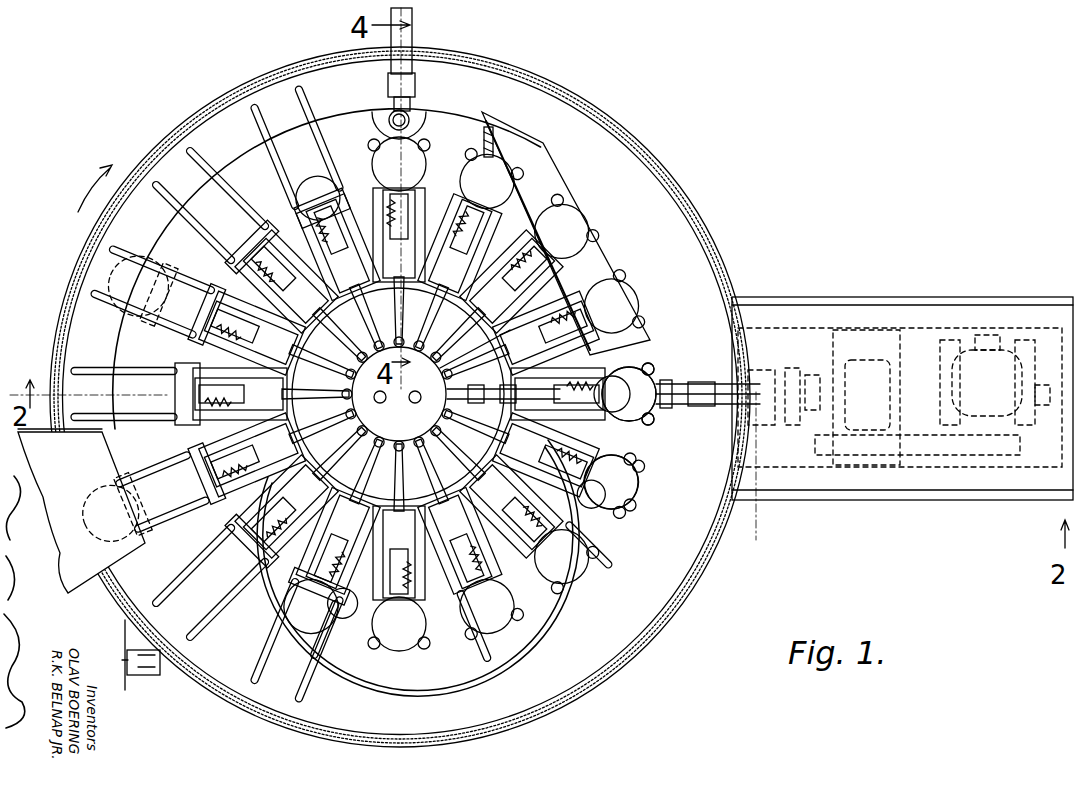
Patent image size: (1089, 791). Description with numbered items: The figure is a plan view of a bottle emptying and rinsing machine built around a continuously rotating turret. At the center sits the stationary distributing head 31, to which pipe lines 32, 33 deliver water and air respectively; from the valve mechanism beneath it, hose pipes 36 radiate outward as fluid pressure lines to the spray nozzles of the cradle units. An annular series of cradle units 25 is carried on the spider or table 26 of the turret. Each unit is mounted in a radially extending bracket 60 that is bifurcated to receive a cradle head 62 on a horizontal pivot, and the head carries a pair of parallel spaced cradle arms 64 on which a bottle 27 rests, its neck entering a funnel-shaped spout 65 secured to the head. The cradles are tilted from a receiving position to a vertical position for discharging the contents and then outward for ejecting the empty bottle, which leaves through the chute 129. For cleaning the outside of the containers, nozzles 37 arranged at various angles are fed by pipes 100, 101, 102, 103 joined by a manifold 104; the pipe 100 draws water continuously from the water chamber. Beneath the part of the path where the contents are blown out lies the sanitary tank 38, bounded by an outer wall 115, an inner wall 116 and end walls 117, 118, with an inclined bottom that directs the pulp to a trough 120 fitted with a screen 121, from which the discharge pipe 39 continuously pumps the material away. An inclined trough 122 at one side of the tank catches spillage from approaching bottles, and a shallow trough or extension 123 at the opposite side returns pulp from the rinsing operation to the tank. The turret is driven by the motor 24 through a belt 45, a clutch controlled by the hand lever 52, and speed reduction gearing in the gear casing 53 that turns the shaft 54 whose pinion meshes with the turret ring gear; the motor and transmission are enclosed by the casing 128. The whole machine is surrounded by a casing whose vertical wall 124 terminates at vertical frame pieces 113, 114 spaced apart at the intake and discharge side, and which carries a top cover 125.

The bottle 27 is at (412, 165).
The nozzles 37 is at (616, 380).
The screen 121 is at (410, 118).
The trough 120 is at (412, 126).
The discharge pipe 39 is at (413, 33).
The tank 38 is at (488, 127).
The vertical wall 124 is at (470, 62).
The vertical frame piece 113 is at (172, 140).
The shallow trough or extension 123 is at (600, 268).
The end wall 118 is at (520, 192).
The spider or table 26 is at (525, 318).
The distributing head 31 is at (475, 349).
The pipe line 32 is at (418, 391).
The pipe line 33 is at (374, 393).
The hose pipes 36 is at (360, 340).
The top cover 125 is at (503, 385).
The shaft 54 is at (708, 382).
The pipe 100 is at (668, 408).
The bracket 60 is at (222, 340).
The cradle head 62 is at (262, 302).
The funnel-shaped spout 65 is at (196, 305).
The cradle arms 64 is at (96, 292).
The cradle unit 25 is at (609, 366).
The inner wall 116 is at (372, 205).
The outer wall 115 is at (346, 150).
The end wall 117 is at (268, 180).
The inclined trough 122 is at (128, 350).
The chute 129 is at (108, 470).
The vertical frame piece 114 is at (200, 630).
The manifold 104 is at (555, 430).
The pipe 101 is at (610, 540).
The pipe 102 is at (495, 640).
The pipe 103 is at (330, 654).
The hand lever 52 is at (128, 688).
The casing 128 is at (940, 312).
The gear casing 53 is at (880, 372).
The motor 24 is at (1008, 360).
The belt 45 is at (930, 455).